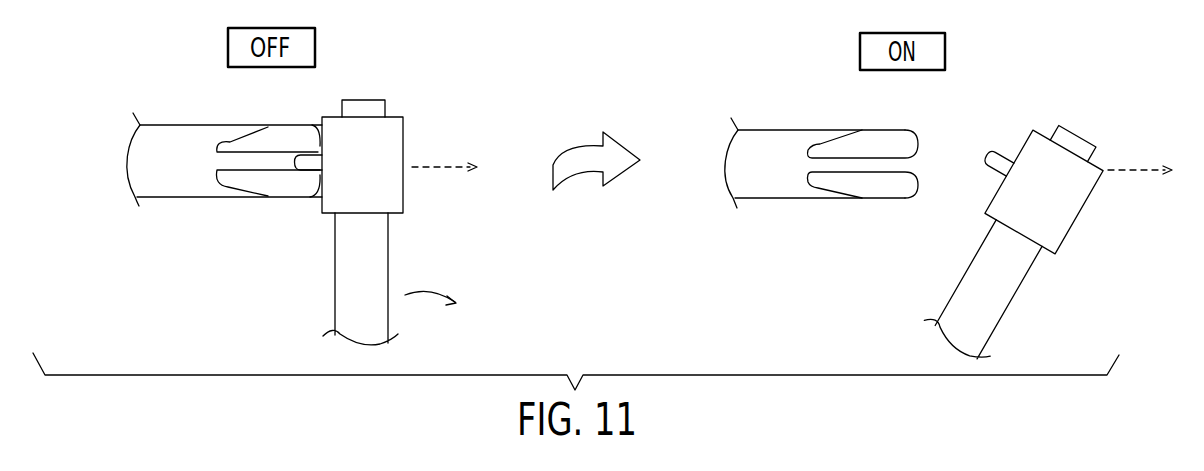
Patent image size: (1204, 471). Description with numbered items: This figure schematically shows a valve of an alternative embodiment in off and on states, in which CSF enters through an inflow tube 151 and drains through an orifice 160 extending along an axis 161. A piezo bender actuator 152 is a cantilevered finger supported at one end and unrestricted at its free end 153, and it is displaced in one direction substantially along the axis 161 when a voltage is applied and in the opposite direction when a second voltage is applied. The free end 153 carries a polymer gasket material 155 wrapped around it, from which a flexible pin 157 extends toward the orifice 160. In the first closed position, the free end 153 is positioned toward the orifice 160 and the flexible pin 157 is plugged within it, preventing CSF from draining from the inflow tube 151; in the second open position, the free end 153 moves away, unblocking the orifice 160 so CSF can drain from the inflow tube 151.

The inflow tube 151 is at (172, 180).
The piezo bender actuator 152 is at (378, 275).
The free end 153 is at (363, 100).
The polymer gasket material 155 is at (392, 200).
The flexible pin 157 is at (305, 168).
The orifice 160 is at (312, 128).
The axis 161 is at (440, 165).